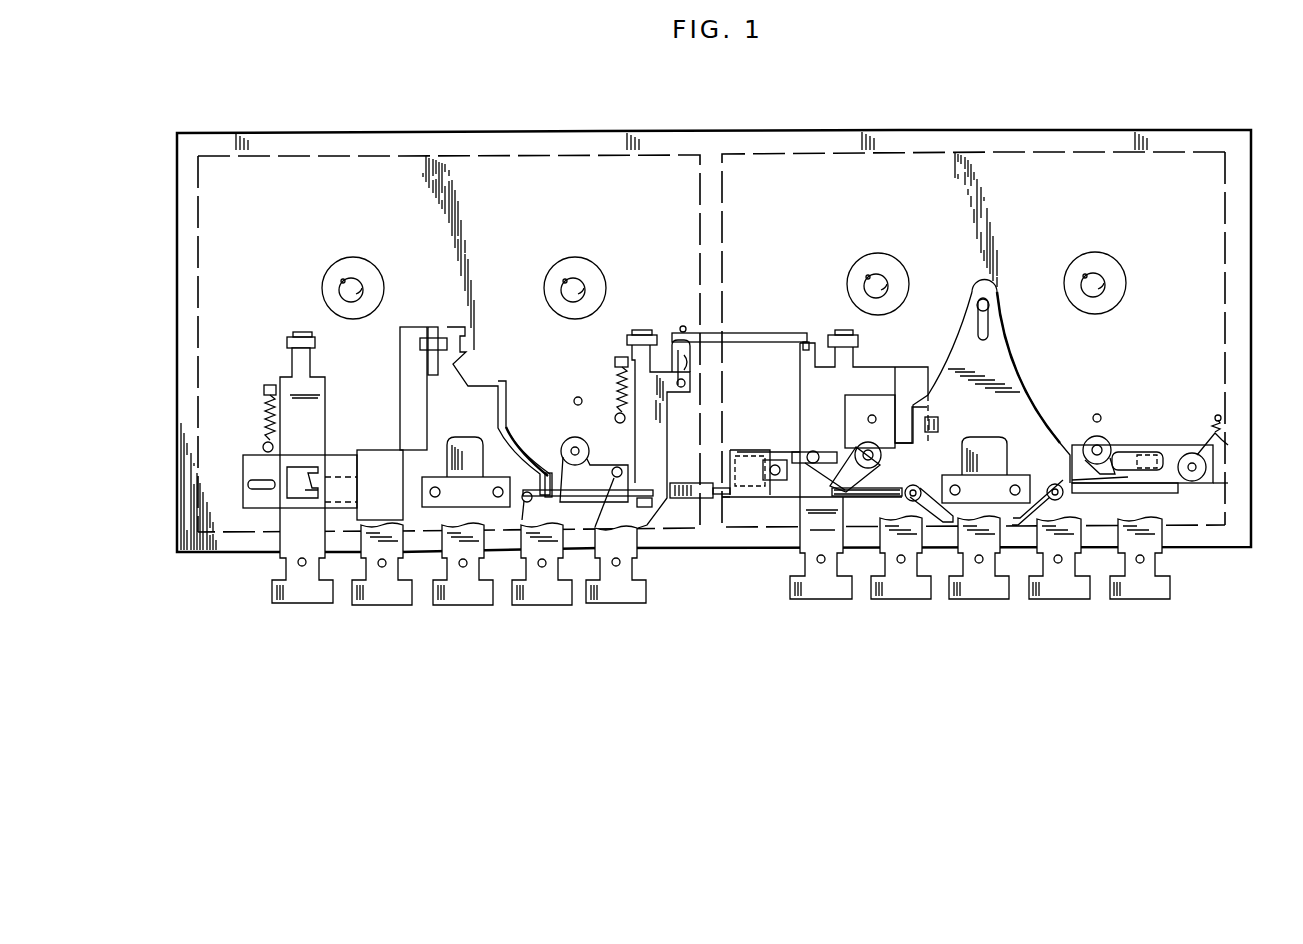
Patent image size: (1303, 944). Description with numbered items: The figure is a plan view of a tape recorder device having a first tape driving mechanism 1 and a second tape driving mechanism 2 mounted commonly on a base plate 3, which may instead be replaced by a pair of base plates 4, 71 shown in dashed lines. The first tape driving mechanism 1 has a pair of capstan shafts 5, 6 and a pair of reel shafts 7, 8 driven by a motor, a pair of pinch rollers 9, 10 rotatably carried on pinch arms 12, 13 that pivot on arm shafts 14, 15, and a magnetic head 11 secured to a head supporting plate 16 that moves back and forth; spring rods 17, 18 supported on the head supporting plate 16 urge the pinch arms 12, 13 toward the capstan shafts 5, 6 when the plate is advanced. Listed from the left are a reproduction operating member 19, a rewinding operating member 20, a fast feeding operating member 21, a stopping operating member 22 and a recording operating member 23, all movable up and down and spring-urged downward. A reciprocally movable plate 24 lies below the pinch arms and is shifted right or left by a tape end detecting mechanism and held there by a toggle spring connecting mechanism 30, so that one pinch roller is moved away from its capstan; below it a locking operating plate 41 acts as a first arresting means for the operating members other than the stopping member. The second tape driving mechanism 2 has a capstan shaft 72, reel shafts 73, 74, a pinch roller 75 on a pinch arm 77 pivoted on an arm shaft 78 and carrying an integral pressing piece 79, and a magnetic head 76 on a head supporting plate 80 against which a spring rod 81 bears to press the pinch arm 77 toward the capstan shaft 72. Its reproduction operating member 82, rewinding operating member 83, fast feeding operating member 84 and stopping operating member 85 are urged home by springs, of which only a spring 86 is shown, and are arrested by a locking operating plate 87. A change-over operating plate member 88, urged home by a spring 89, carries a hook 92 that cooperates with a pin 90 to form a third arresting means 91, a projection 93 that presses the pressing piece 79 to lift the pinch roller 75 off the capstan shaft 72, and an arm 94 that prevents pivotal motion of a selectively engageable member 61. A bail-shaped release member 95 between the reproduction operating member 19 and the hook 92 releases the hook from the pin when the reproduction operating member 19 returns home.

The first tape driving mechanism 1 is at (1002, 152).
The second tape driving mechanism 2 is at (510, 156).
The base plate 3 is at (763, 130).
The base plate 4 is at (1225, 245).
The capstan shaft 5 is at (870, 415).
The capstan shaft 6 is at (1100, 414).
The reel shaft 7 is at (882, 280).
The reel shaft 8 is at (1103, 280).
The pinch roller 9 is at (872, 445).
The pinch roller 10 is at (1088, 440).
The magnetic head 11 is at (985, 440).
The pinch arm 12 is at (850, 470).
The pinch arm 13 is at (1125, 450).
The arm shaft 14 is at (812, 452).
The arm shaft 15 is at (1183, 455).
The head supporting plate 16 is at (1000, 365).
The spring rod 17 is at (870, 494).
The spring rod 18 is at (1068, 492).
The reproduction operating member 19 is at (800, 560).
The rewinding operating member 20 is at (880, 560).
The fast feeding operating member 21 is at (958, 560).
The stopping operating member 22 is at (1037, 560).
The recording operating member 23 is at (1119, 560).
The reciprocally movable plate 24 is at (1228, 483).
The toggle spring connecting mechanism 30 is at (1230, 440).
The locking operating plate 41 is at (1170, 490).
The selectively engageable member 61 is at (765, 478).
The base plate 71 is at (210, 293).
The capstan shaft 72 is at (575, 399).
The reel shaft 73 is at (362, 280).
The reel shaft 74 is at (582, 282).
The pinch roller 75 is at (565, 445).
The magnetic head 76 is at (465, 440).
The pinch arm 77 is at (600, 465).
The arm shaft 78 is at (608, 482).
The pressing piece 79 is at (660, 483).
The head supporting plate 80 is at (465, 360).
The spring rod 81 is at (522, 492).
The reproduction operating member 82 is at (281, 563).
The rewinding operating member 83 is at (361, 563).
The fast feeding operating member 84 is at (442, 563).
The stopping operating member 85 is at (521, 563).
The spring 86 is at (266, 410).
The locking operating plate 87 is at (246, 472).
The change-over operating plate member 88 is at (596, 563).
The spring 89 is at (617, 385).
The pin 90 is at (683, 326).
The third arresting means 91 is at (697, 355).
The hook 92 is at (676, 345).
The projection 93 is at (690, 500).
The arm 94 is at (720, 496).
The release member 95 is at (770, 333).